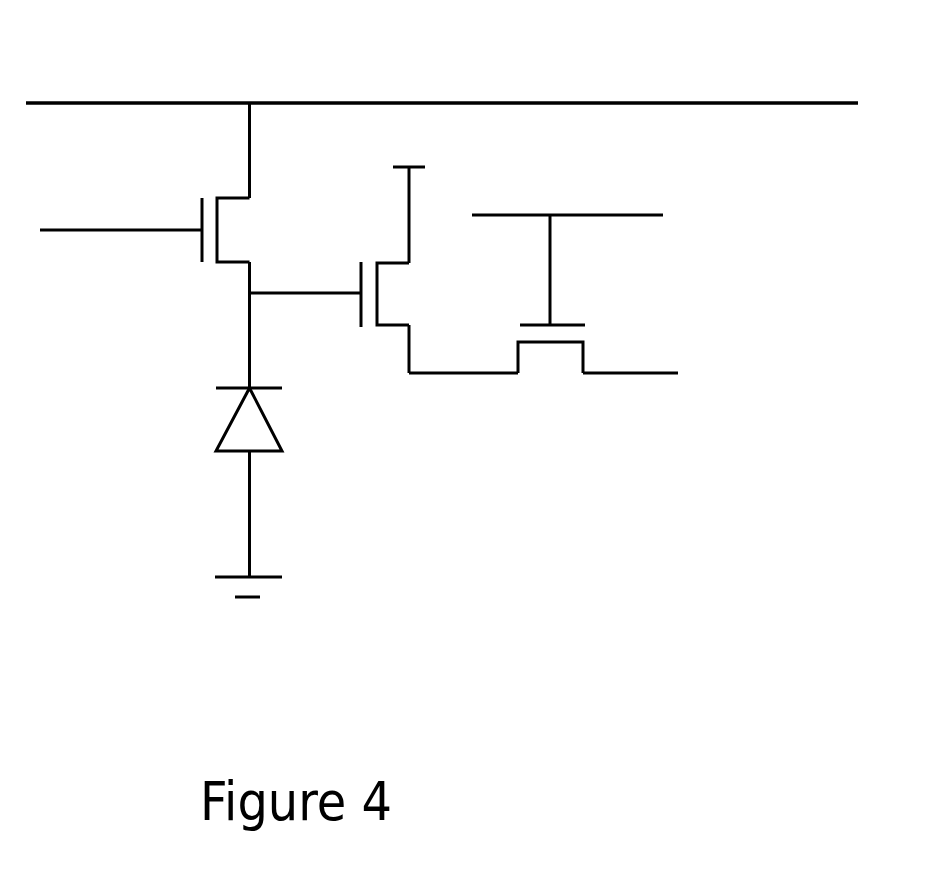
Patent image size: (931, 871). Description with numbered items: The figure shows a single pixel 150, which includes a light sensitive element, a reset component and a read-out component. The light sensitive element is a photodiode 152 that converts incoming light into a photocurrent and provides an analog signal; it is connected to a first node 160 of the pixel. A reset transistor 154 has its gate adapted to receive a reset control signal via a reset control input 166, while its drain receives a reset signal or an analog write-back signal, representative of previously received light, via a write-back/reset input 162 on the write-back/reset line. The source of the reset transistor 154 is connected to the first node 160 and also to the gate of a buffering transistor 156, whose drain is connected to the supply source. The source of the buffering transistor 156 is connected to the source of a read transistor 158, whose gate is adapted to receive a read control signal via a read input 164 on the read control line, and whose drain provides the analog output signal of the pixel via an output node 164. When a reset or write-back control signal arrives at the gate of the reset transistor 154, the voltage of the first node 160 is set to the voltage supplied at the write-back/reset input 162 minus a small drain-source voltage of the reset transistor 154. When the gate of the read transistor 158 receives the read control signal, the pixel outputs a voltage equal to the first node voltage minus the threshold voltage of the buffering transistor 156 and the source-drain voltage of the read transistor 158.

The pixel P11 150 is at (103, 649).
The photodiode D1 152 is at (304, 449).
The reset transistor M1 154 is at (238, 230).
The buffering transistor M2 156 is at (431, 261).
The read transistor M3 158 is at (551, 309).
The first node 160 is at (243, 293).
The write-back/reset input 162 is at (250, 103).
The read input / output node 164 is at (551, 215).
The reset control input 166 is at (112, 213).